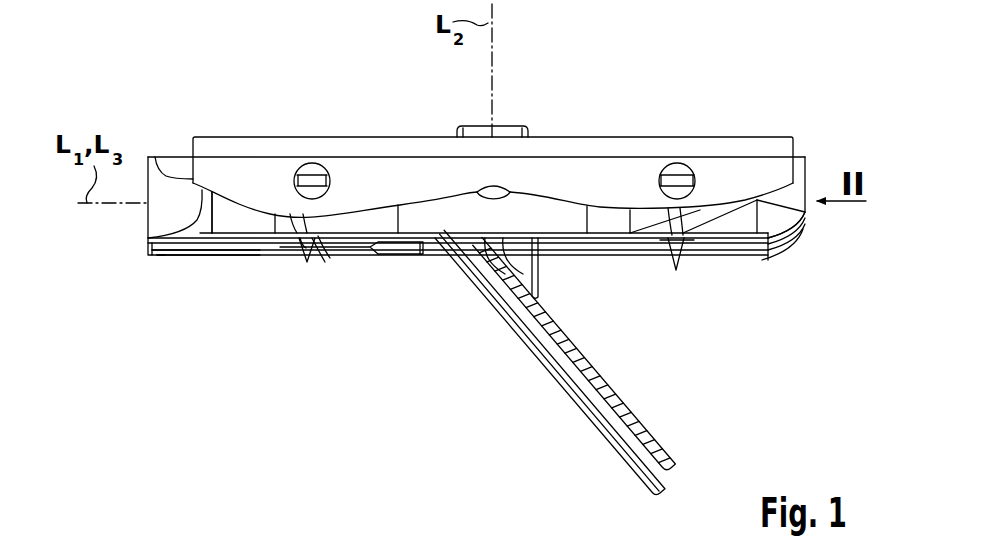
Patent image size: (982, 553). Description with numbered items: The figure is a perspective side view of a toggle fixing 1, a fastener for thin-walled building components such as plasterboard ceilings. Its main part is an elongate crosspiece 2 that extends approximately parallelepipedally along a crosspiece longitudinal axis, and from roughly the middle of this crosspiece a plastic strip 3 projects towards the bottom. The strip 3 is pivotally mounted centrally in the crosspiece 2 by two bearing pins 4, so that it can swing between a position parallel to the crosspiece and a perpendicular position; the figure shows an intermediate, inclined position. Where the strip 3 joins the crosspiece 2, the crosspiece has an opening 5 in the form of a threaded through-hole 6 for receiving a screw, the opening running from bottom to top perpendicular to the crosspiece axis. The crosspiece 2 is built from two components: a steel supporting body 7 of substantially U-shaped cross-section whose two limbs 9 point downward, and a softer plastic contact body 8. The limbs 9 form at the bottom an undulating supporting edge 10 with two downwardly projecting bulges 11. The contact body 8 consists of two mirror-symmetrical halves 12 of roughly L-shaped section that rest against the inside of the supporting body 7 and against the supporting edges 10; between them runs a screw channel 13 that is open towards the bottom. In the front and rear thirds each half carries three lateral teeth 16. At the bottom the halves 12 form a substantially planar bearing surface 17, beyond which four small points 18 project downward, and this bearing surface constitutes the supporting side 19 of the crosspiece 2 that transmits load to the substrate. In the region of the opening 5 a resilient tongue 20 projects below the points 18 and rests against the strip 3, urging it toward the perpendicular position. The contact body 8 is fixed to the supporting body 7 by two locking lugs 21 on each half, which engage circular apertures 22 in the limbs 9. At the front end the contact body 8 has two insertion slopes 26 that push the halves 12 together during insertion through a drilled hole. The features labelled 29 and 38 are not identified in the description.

The toggle fixing 1 is at (758, 80).
The crosspiece 2 is at (702, 130).
The strip 3 is at (613, 404).
The bearing pins 4 is at (495, 194).
The opening 5 is at (507, 122).
The threaded through-hole 6 is at (517, 132).
The supporting body 7 is at (748, 172).
The contact body 8 is at (775, 215).
The limbs 9 is at (372, 172).
The supporting edge 10 is at (243, 208).
The bulges 11 is at (302, 225).
The halves 12 is at (148, 228).
The screw channel 13 is at (816, 231).
The teeth 16 is at (263, 227).
The bearing surface 17 is at (186, 250).
The points 18 is at (320, 255).
The supporting side 19 is at (200, 256).
The resilient tongue 20 is at (540, 298).
The locking lugs 21 is at (313, 181).
The circular apertures 22 is at (296, 176).
The insertion slopes 26 is at (148, 179).
The chamfer 29 is at (804, 210).
The inner web 38 is at (231, 213).